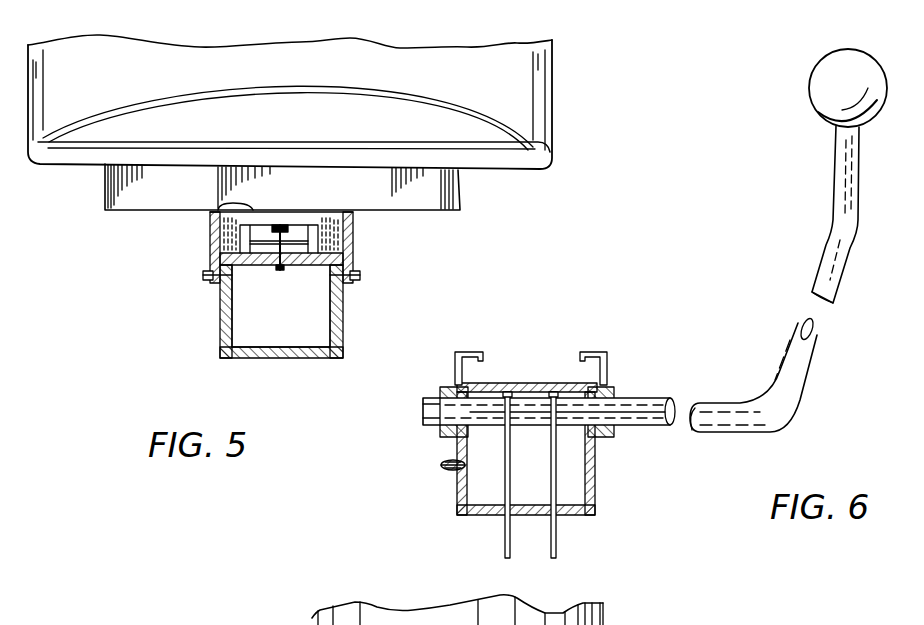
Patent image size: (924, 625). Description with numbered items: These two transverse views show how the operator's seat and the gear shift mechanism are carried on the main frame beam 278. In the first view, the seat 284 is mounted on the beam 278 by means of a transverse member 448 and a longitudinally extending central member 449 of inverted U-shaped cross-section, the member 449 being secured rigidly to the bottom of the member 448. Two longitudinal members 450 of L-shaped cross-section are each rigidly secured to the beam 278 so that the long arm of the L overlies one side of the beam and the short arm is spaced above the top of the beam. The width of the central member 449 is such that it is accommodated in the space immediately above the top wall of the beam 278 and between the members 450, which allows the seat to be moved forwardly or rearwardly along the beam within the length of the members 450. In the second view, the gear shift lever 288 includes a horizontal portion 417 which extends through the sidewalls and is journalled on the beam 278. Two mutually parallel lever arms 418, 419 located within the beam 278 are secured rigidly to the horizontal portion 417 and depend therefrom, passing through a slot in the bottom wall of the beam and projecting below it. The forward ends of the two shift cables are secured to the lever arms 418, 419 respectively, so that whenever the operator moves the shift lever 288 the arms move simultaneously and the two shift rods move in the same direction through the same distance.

In FIG. 5, the seat 284 is at (566, 136).
In FIG. 5, the transverse member 448 is at (462, 208).
In FIG. 5, the longitudinally extending central member 449 is at (216, 210).
In FIG. 5, the longitudinal members 450 is at (355, 258).
In FIG. 5, the beam 278 is at (338, 338).
In FIG. 6, the beam 278 is at (597, 488).
In FIG. 6, the horizontal portion 417 is at (640, 427).
In FIG. 6, the lever arm 418 is at (502, 540).
In FIG. 6, the lever arm 419 is at (557, 541).
In FIG. 6, the gear shift lever 288 is at (840, 287).